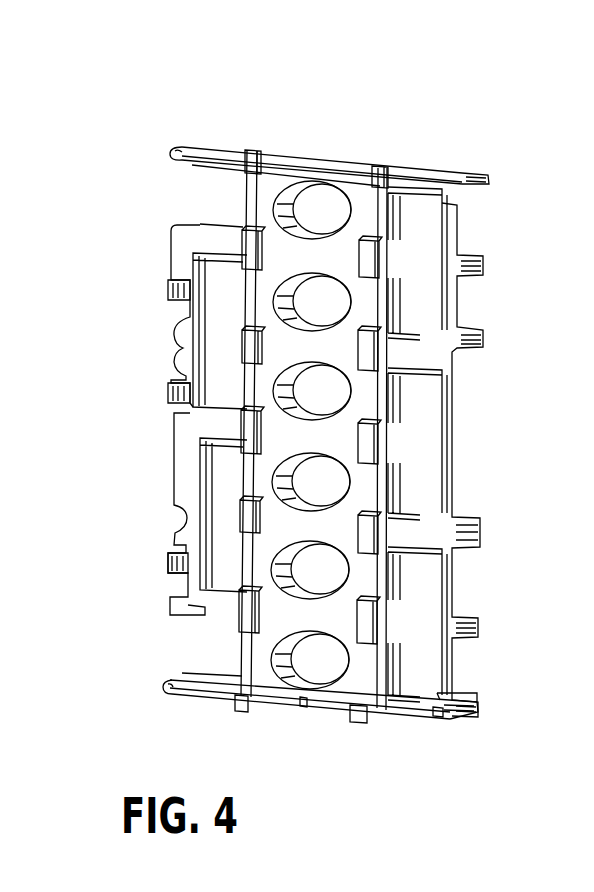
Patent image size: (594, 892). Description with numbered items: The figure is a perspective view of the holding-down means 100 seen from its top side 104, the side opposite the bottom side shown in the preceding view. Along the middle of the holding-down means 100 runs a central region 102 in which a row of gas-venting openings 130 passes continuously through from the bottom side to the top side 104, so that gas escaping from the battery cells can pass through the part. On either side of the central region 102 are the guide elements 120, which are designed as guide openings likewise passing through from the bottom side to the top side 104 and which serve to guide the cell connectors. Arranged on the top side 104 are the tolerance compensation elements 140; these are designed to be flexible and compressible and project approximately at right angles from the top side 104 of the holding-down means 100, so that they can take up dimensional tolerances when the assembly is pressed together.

The holding-down means 100 is at (468, 153).
The central region 102 is at (352, 165).
The top side 104 is at (335, 437).
The guide elements 120 is at (205, 331).
The gas-venting openings 130 is at (318, 207).
The tolerance compensation elements 140 is at (238, 245).